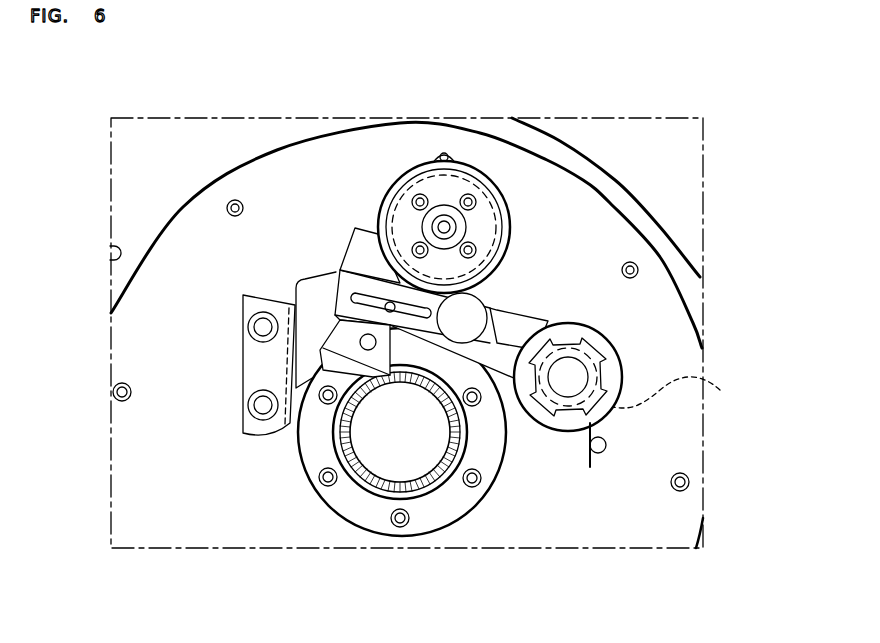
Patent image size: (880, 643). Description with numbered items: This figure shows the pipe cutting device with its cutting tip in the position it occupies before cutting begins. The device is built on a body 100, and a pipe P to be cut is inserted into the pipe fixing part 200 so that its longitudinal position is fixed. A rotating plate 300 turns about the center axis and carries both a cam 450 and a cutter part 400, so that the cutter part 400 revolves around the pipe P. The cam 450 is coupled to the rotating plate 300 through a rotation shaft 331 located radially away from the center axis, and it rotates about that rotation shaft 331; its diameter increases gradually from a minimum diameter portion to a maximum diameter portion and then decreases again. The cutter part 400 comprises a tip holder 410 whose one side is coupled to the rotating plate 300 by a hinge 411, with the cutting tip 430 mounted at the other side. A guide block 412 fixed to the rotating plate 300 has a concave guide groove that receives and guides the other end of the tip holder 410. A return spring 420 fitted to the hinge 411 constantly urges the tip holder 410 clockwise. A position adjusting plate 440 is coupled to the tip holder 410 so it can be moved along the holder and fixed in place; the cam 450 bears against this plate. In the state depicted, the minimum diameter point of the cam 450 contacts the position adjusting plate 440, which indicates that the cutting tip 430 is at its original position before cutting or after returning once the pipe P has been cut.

The body 100 is at (145, 150).
The pipe fixing part 200 is at (449, 486).
The rotating plate 300 is at (190, 253).
The rotation shaft 331 is at (437, 207).
The cutter part 400 is at (514, 310).
The tip holder 410 is at (527, 320).
The hinge 411 is at (573, 370).
The guide block 412 is at (253, 358).
The return spring 420 is at (690, 392).
The cutting tip 430 is at (352, 338).
The position adjusting plate 440 is at (363, 245).
The cam 450 is at (475, 186).
The pipe P is at (363, 498).